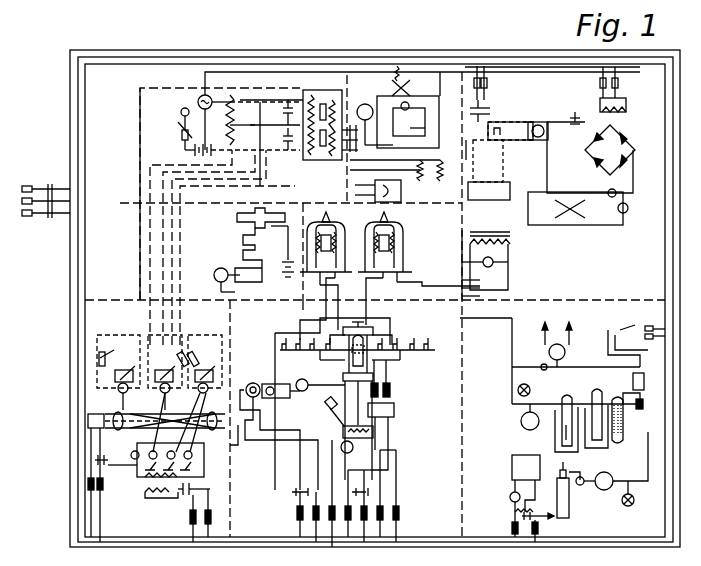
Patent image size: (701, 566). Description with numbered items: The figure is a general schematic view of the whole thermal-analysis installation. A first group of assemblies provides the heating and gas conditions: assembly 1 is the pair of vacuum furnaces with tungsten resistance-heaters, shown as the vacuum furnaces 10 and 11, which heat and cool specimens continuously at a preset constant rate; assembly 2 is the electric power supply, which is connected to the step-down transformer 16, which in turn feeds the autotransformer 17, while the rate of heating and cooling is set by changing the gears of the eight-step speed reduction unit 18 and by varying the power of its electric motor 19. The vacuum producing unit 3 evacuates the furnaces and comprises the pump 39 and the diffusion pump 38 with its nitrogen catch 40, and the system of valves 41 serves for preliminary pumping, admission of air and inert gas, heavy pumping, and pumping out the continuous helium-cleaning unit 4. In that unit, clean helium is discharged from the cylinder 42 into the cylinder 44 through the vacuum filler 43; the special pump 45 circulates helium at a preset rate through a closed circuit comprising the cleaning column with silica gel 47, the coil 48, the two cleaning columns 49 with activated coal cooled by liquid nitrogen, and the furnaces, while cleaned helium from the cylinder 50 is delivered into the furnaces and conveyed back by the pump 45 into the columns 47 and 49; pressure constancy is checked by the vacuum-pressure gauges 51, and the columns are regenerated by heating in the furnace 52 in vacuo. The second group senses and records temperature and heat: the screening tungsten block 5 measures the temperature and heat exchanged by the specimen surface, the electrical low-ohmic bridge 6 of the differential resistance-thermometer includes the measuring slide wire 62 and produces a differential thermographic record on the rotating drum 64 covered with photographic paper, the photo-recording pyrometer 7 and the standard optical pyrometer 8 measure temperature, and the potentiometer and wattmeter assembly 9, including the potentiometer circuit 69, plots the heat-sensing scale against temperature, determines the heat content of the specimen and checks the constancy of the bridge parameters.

The assembly of two vacuum furnaces 1 is at (449, 252).
The electric power supply 2 is at (552, 146).
The vacuum producing unit 3 is at (380, 401).
The continuous helium-cleaning unit 4 is at (684, 404).
The screening tungsten block 5 is at (299, 144).
The electrical low-ohmic bridge of differential resistance-thermometer 6 is at (121, 193).
The photo-recording pyrometer 7 is at (156, 438).
The standard optical pyrometer 8 is at (248, 247).
The potentiometer and wattmeter assembly 9 is at (396, 135).
The vacuum furnace 10 is at (308, 240).
The vacuum furnace 11 is at (395, 238).
The step-down transformer 16 is at (504, 259).
The autotransformer 17 is at (498, 158).
The eight-step speed reduction unit 18 is at (505, 130).
The electric motor 19 is at (545, 120).
The diffusion pump 38 is at (364, 424).
The pump 39 is at (258, 378).
The nitrogen catch 40 is at (362, 370).
The system of valves 41 is at (276, 340).
The cylinder 42 is at (568, 508).
The vacuum filler 43 is at (612, 463).
The cylinder 44 is at (604, 490).
The special pump 45 is at (632, 384).
The cleaning column with silica gel 47 is at (622, 430).
The coil 48 is at (566, 411).
The cleaning columns with activated coal 49 is at (576, 441).
The cylinder 50 is at (522, 424).
The vacuum-pressure gauges 51 is at (520, 388).
The furnace 52 is at (512, 466).
The measuring slide wire 62 is at (190, 136).
The rotating drum 64 is at (234, 446).
The potentiometer circuit 69 is at (410, 128).